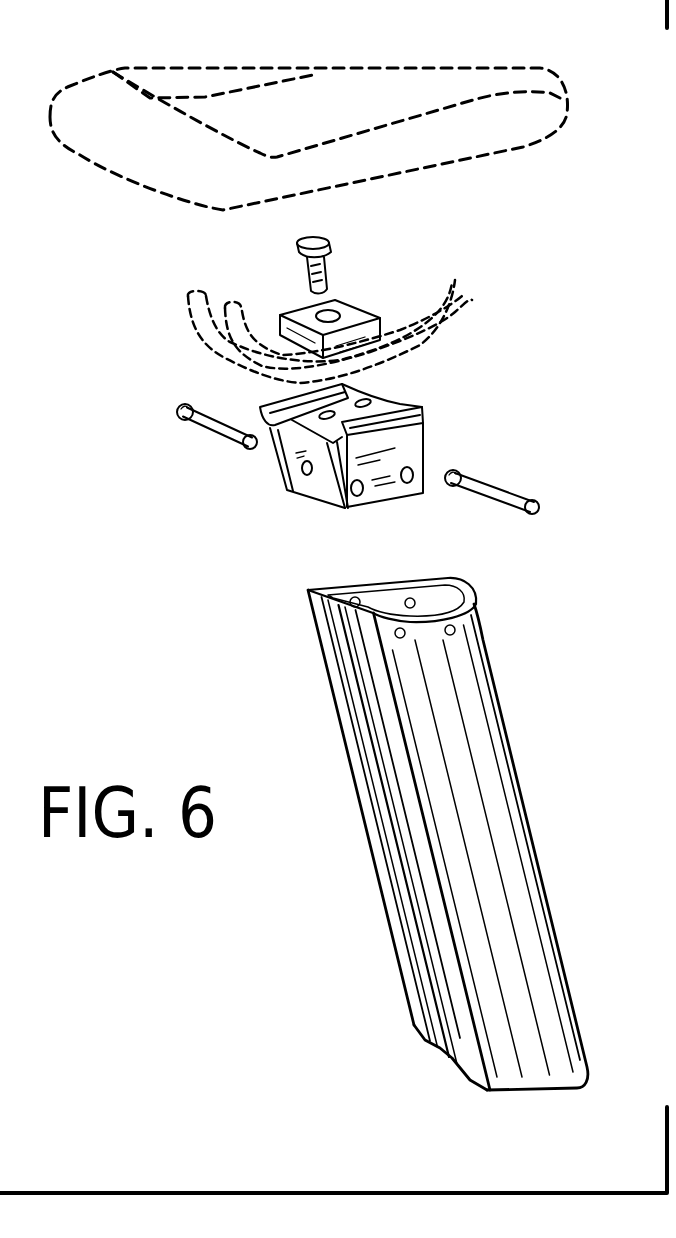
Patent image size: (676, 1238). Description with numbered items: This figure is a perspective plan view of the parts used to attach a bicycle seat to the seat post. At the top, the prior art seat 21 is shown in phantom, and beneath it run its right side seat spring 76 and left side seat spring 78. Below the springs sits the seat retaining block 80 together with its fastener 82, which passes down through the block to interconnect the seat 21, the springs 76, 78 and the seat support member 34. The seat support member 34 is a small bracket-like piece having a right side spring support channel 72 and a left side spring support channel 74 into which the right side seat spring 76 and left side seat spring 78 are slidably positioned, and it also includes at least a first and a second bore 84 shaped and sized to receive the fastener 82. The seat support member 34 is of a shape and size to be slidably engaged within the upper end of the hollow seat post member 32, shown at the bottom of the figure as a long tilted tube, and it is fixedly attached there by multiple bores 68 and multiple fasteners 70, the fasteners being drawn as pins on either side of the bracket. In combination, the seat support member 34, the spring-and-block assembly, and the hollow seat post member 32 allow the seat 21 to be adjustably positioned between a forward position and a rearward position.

The seat 21 is at (358, 102).
The hollow seat post member 32 is at (498, 752).
The seat support member 34 is at (413, 452).
The bores 68 is at (357, 503).
The fasteners 70 is at (467, 493).
The right side spring support channel 72 is at (417, 405).
The left side spring support channel 74 is at (267, 398).
The right side seat spring 76 is at (472, 288).
The left side seat spring 78 is at (459, 273).
The seat retaining block 80 is at (353, 310).
The fastener 82 is at (327, 237).
The first and second bore 84 is at (373, 393).